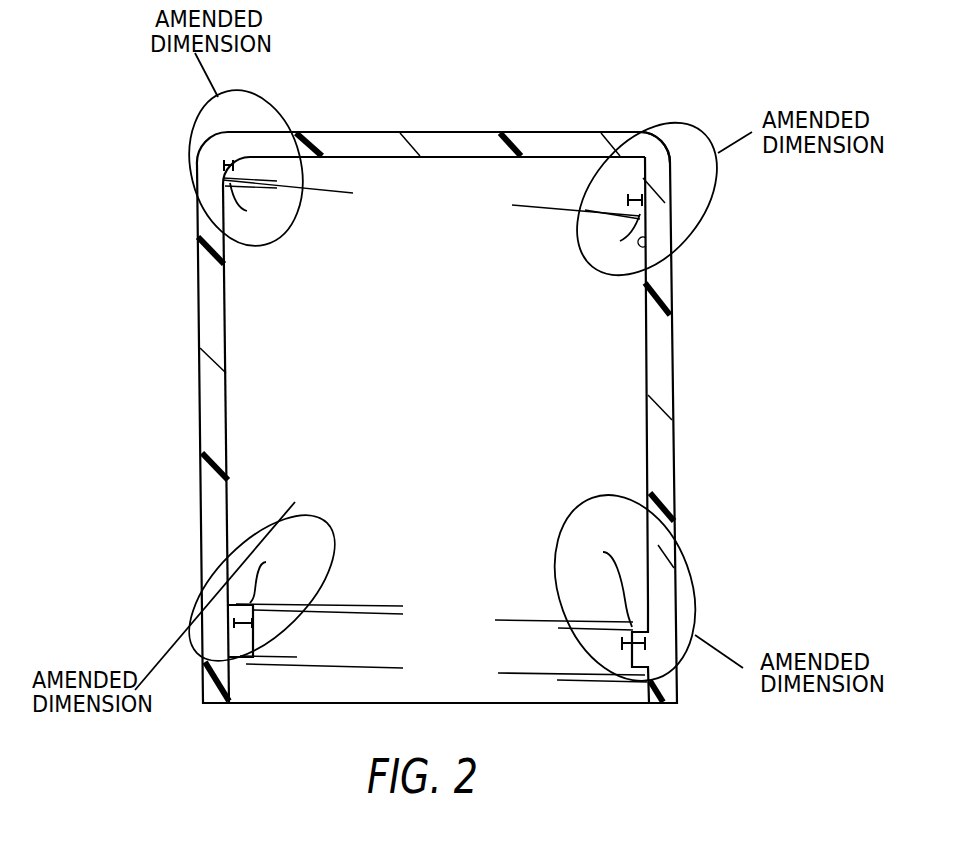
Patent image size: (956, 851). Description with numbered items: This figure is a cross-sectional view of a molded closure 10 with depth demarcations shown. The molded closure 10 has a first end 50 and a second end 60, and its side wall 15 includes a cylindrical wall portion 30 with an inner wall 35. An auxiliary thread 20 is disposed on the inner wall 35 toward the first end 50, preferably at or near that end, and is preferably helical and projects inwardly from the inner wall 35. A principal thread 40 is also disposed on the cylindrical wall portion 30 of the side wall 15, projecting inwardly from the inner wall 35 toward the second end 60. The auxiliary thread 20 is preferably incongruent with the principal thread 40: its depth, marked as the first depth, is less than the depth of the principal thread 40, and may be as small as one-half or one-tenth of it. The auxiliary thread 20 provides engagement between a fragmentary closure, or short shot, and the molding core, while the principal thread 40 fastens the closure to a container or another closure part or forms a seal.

The molded closure 10 is at (180, 225).
The side wall 15 is at (198, 321).
The auxiliary thread 20 is at (590, 212).
The cylindrical wall portion 30 is at (658, 362).
The inner wall 35 is at (638, 240).
The principal thread 40 is at (548, 618).
The first end 50 is at (540, 132).
The second end 60 is at (532, 703).